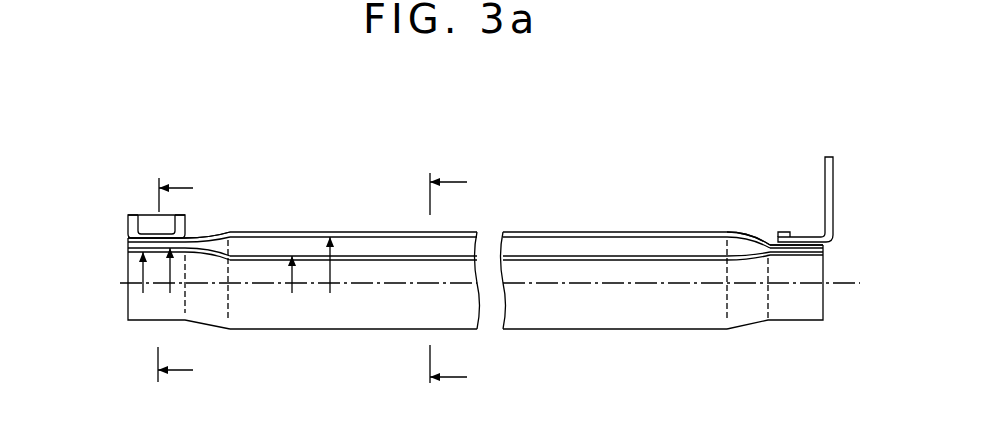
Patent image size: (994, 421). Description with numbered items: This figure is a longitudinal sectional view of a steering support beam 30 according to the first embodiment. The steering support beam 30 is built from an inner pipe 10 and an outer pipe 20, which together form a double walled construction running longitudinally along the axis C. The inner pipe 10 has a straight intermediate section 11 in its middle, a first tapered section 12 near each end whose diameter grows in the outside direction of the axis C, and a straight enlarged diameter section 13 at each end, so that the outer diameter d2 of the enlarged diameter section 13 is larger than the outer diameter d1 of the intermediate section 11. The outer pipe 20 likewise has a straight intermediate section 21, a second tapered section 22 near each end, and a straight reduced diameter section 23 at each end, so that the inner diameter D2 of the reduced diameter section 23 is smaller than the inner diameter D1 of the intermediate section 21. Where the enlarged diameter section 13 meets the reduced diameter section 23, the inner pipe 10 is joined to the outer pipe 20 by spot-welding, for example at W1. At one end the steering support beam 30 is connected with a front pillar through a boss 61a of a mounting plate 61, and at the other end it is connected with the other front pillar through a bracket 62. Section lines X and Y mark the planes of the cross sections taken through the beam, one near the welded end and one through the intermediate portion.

The inner pipe 10 is at (384, 250).
The intermediate section 11 is at (548, 253).
The first tapered section 12 is at (223, 236).
The enlarged diameter section 13 is at (128, 252).
The outer pipe 20 is at (310, 230).
The intermediate section 21 is at (597, 232).
The second tapered section 22 is at (215, 234).
The reduced diameter section 23 is at (128, 236).
The steering support beam 30 is at (466, 215).
The mounting plate 61 is at (831, 172).
The boss 61a is at (810, 236).
The bracket 62 is at (130, 228).
The spot-welding location W1 is at (155, 240).
The inner diameter of intermediate section D1 is at (335, 278).
The outer diameter of intermediate section d1 is at (279, 288).
The inner diameter of reduced diameter section D2 is at (141, 268).
The outer diameter of enlarged diameter section d2 is at (170, 293).
The section line X is at (181, 281).
The section line Y is at (458, 263).
The axis C is at (640, 283).